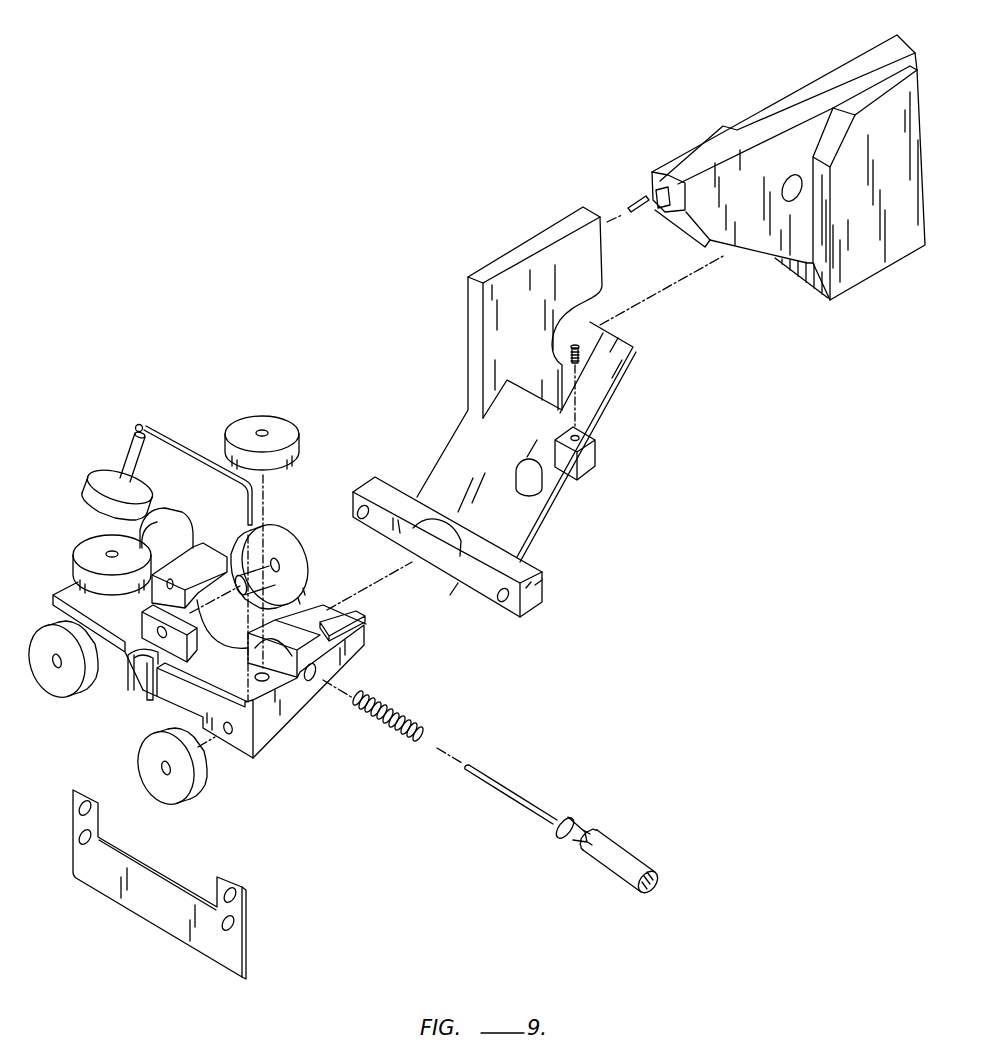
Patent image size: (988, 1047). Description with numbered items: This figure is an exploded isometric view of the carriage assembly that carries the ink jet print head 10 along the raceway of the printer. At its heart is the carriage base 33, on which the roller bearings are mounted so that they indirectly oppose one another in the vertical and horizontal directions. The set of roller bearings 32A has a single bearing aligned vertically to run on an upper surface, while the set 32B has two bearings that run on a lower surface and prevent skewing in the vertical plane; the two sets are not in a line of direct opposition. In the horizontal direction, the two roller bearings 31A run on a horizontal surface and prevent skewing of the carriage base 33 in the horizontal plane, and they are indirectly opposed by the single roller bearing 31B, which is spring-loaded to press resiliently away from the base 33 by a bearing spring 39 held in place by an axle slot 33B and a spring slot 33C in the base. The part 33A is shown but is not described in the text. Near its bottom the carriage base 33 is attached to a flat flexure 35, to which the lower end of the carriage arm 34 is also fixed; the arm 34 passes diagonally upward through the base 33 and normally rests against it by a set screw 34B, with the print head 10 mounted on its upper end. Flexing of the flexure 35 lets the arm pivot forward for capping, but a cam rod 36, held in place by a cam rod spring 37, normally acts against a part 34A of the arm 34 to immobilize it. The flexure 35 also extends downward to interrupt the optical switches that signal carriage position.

The ink jet print head 10 is at (813, 83).
The roller bearings 31A is at (297, 442).
The roller bearing 31B is at (88, 476).
The set of roller bearings 32A is at (303, 568).
The set of roller bearings 32B is at (147, 763).
The carriage base 33 is at (265, 735).
The leaf spring plate 33A is at (355, 620).
The axle slot 33B is at (142, 672).
The spring slot 33C is at (262, 686).
The carriage arm 34 is at (532, 528).
The part of the arm 34A is at (523, 480).
The set screw 34B is at (578, 357).
The flat flexure 35 is at (238, 963).
The cam rod 36 is at (648, 865).
The cam rod spring 37 is at (418, 725).
The bearing spring 39 is at (190, 445).